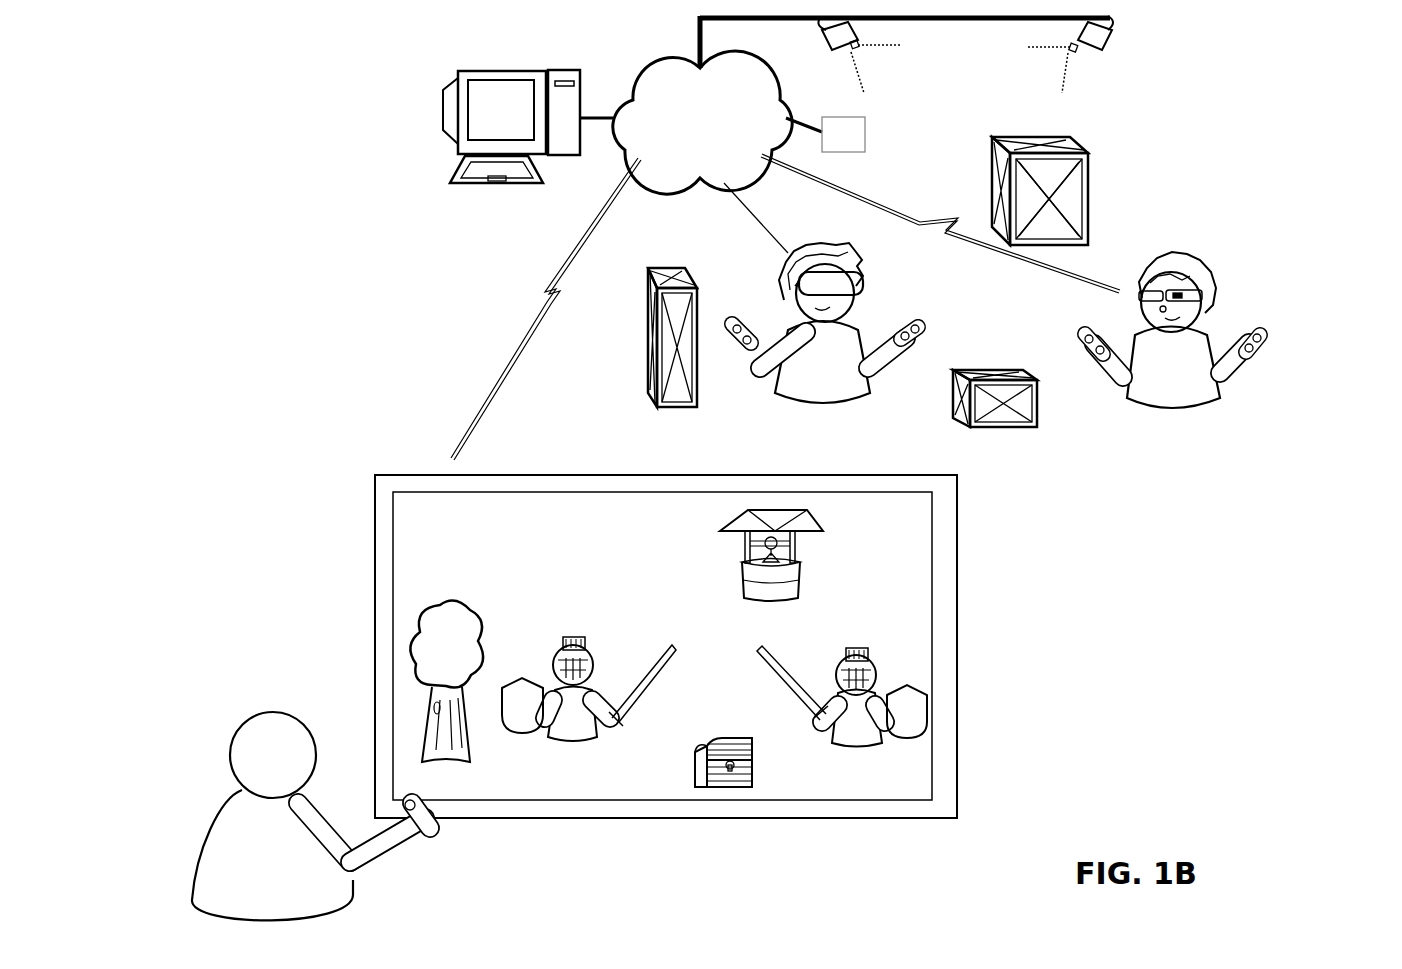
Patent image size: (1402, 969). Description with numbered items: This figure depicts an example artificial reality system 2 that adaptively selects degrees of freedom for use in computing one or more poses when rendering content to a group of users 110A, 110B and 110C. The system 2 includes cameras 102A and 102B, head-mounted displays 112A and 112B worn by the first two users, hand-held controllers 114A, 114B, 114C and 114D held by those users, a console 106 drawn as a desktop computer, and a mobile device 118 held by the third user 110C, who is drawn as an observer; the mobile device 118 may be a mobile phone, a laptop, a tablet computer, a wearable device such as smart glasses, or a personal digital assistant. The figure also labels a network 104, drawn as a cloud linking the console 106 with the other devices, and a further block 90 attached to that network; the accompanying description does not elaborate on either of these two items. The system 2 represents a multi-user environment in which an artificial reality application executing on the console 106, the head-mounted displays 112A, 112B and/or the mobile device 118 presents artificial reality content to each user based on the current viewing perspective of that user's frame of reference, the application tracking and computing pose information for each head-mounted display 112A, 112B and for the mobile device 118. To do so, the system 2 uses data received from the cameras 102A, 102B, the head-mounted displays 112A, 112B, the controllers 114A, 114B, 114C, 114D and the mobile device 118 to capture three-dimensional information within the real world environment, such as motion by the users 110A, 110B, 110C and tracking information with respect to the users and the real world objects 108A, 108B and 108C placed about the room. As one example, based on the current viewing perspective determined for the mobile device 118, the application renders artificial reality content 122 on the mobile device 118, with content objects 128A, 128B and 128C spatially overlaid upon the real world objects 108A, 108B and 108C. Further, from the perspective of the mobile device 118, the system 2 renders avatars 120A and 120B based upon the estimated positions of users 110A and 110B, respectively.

The artificial reality system 2 is at (330, 97).
The service 90 is at (855, 144).
The camera 102A is at (827, 45).
The camera 102B is at (1104, 44).
The network 104 is at (684, 141).
The console 106 is at (476, 70).
The real world object 108A is at (652, 403).
The real world object 108B is at (971, 423).
The real world object 108C is at (1090, 153).
The user 110A is at (857, 338).
The user 110B is at (1162, 339).
The user 110C is at (276, 712).
The HMD 112A is at (863, 281).
The HMD 112B is at (1201, 271).
The controller 114A is at (735, 318).
The controller 114B is at (924, 329).
The controller 114C is at (1078, 330).
The controller 114D is at (1265, 330).
The mobile device 118 is at (958, 592).
The avatar 120A is at (577, 741).
The avatar 120B is at (870, 744).
The artificial reality content 122 is at (585, 553).
The content object 128A is at (471, 608).
The content object 128B is at (721, 735).
The content object 128C is at (800, 572).